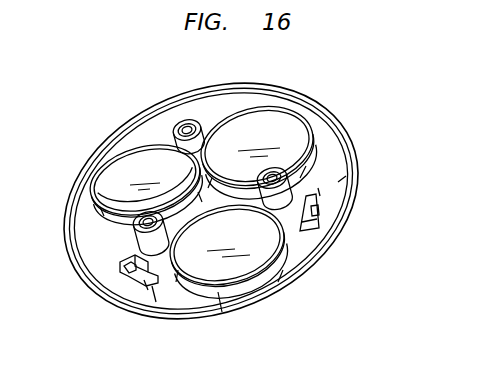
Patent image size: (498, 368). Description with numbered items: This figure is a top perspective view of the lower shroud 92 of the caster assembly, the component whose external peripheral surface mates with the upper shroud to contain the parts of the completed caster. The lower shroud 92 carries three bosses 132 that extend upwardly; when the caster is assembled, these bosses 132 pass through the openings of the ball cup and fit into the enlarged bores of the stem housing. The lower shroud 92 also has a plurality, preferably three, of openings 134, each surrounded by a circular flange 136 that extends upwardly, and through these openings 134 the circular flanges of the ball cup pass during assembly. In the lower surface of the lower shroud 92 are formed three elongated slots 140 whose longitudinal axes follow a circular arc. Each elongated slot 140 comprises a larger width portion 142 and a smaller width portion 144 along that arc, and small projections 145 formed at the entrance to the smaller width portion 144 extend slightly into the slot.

The lower shroud 92 is at (301, 253).
The bosses 132 is at (172, 142).
The openings 134 is at (140, 185).
The circular flanges 136 is at (100, 214).
The elongated slots 140 is at (130, 273).
The larger width portion 142 is at (130, 276).
The smaller width portion 144 is at (155, 305).
The small projections 145 is at (147, 282).